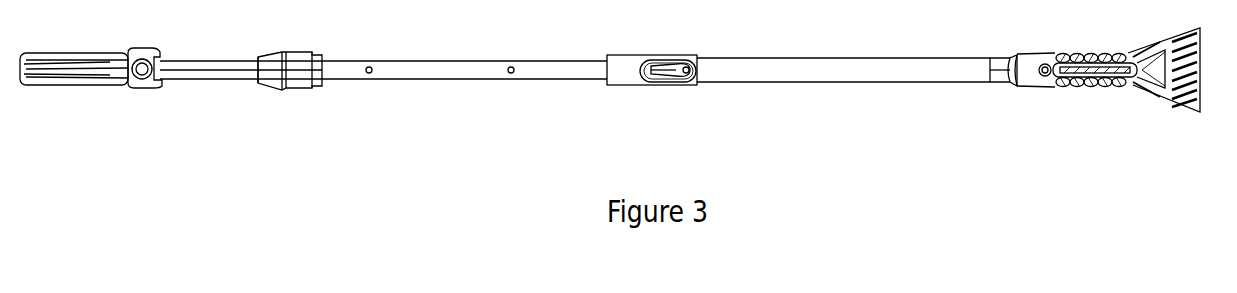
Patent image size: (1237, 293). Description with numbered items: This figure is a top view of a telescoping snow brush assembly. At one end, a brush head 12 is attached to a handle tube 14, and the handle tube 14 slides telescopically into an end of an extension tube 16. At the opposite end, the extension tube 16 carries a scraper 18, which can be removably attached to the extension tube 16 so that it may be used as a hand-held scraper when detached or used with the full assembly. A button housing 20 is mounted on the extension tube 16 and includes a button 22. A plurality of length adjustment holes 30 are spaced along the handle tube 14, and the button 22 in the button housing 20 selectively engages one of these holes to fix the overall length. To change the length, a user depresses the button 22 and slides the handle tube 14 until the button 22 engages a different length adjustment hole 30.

The brush head 12 is at (230, 65).
The handle tube 14 is at (428, 70).
The extension tube 16 is at (820, 73).
The scraper 18 is at (1030, 63).
The button housing 20 is at (627, 62).
The button 22 is at (683, 83).
The length adjustment holes 30 is at (372, 67).